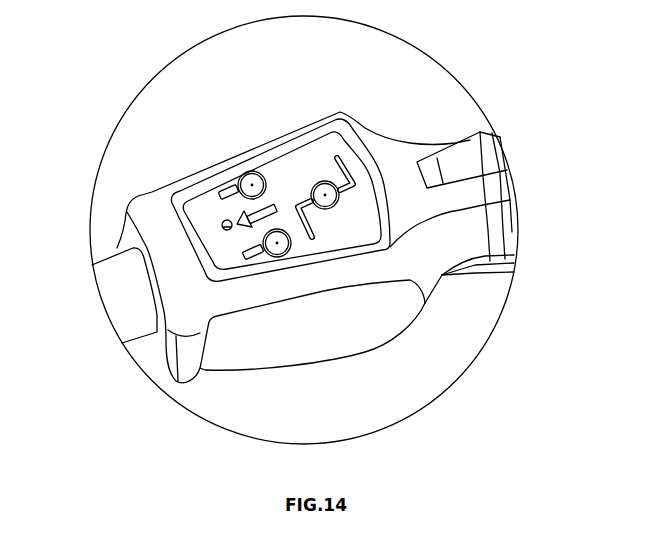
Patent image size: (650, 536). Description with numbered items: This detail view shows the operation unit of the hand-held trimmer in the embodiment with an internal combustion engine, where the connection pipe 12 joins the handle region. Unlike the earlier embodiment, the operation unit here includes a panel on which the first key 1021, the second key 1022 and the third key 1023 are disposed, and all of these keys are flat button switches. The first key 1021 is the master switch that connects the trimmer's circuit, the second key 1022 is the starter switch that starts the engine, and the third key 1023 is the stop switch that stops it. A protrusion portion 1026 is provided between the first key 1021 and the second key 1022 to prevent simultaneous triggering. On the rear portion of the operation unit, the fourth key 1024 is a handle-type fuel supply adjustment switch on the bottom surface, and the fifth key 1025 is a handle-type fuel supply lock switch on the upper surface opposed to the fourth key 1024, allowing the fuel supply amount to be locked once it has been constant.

The connection pipe 12 is at (123, 308).
The first key 1021 is at (277, 250).
The second key 1022 is at (243, 181).
The third key 1023 is at (343, 162).
The fourth key 1024 is at (488, 260).
The fifth key 1025 is at (477, 162).
The protrusion portion 1026 is at (226, 219).